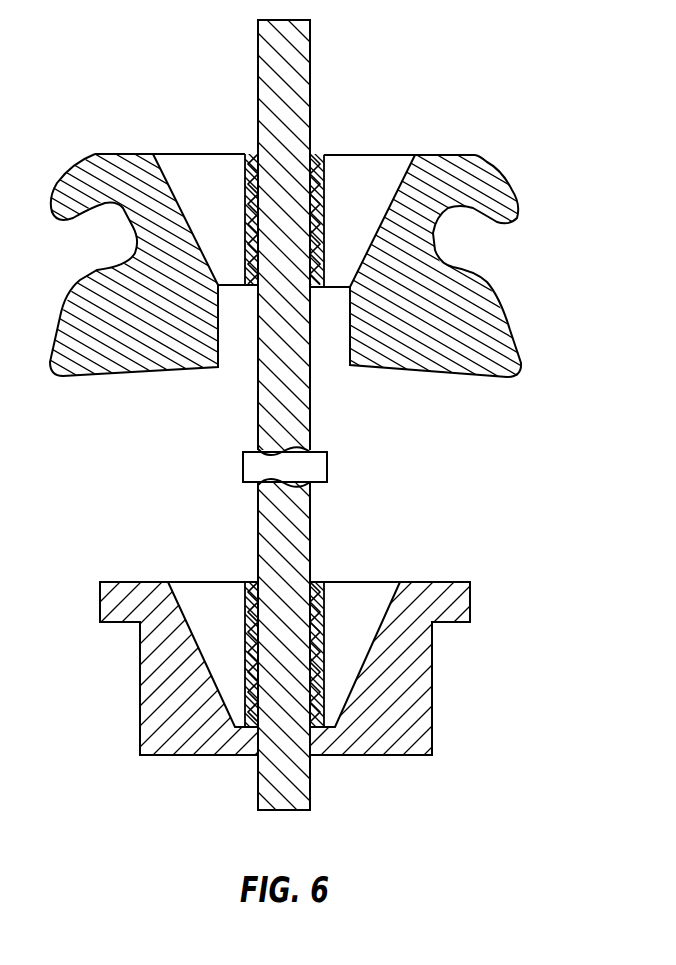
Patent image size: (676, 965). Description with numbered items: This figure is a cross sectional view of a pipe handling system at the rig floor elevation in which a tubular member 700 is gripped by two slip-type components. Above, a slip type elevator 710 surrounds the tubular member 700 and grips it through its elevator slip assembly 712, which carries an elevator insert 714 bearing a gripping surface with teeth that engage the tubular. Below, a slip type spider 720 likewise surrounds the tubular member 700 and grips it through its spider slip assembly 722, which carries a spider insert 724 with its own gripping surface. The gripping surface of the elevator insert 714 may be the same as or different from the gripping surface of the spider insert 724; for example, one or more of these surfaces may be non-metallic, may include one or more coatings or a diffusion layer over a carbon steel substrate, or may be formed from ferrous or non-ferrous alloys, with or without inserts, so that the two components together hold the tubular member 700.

The tubular member 700 is at (258, 523).
The slip type elevator 710 is at (310, 269).
The elevator slip assembly 712 is at (344, 195).
The elevator insert 714 is at (326, 178).
The slip type spider 720 is at (308, 666).
The spider slip assembly 722 is at (345, 627).
The spider insert 724 is at (326, 607).